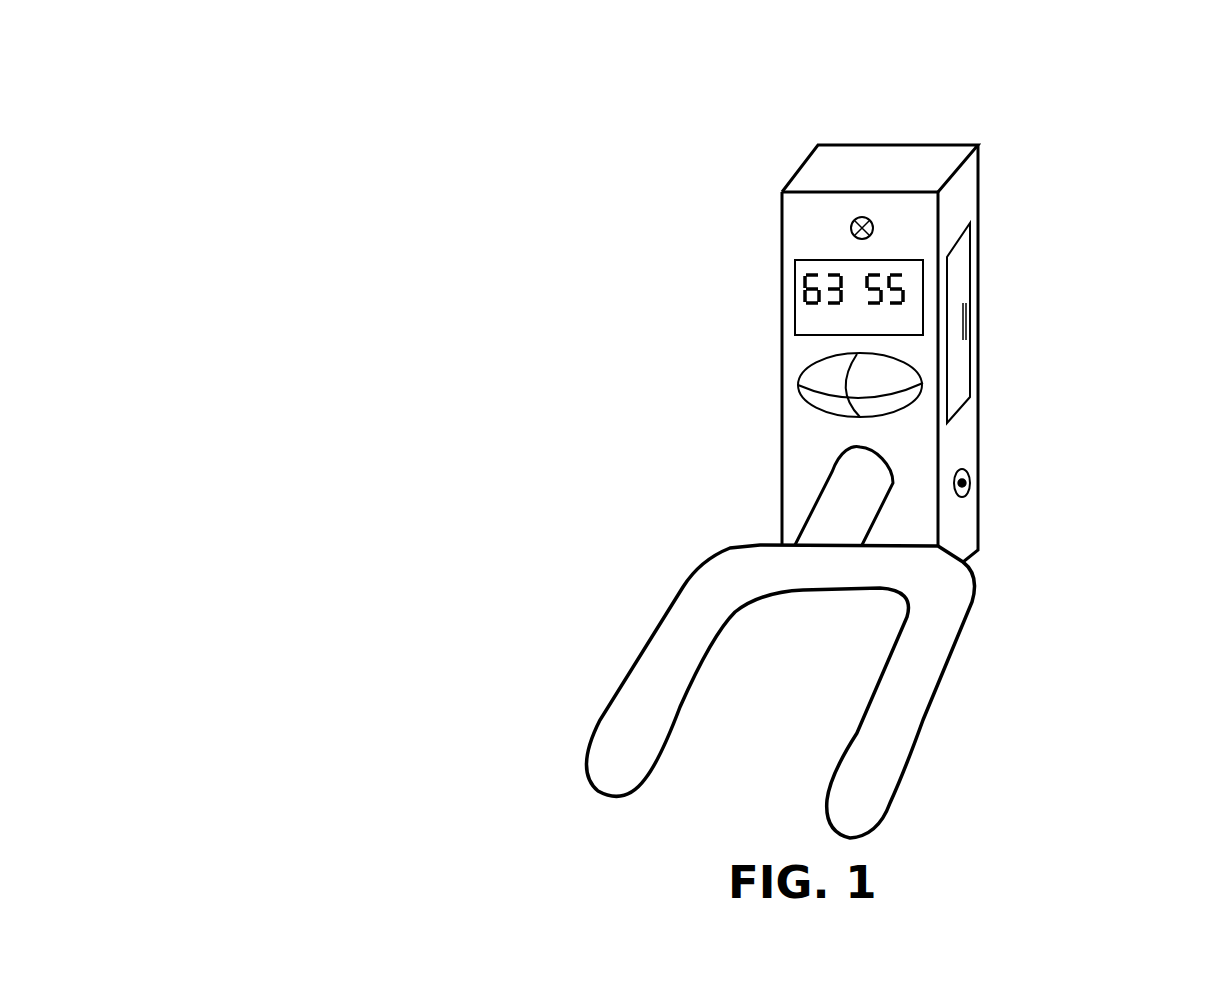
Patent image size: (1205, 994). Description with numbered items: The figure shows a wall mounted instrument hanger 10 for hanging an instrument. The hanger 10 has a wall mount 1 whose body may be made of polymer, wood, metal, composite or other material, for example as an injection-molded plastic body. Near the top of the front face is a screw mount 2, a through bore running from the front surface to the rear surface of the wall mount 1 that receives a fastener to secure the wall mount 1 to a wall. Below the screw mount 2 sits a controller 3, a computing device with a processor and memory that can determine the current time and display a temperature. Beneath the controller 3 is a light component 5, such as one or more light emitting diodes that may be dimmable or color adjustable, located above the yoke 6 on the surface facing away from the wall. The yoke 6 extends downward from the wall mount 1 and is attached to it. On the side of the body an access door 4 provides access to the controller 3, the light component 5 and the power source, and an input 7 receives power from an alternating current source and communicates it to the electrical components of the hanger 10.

The wall mounted instrument hanger 10 is at (246, 89).
The wall mount 1 is at (803, 217).
The screw mount 2 is at (871, 229).
The controller 3 is at (806, 312).
The access door 4 is at (960, 269).
The light component 5 is at (890, 402).
The yoke 6 is at (693, 605).
The input 7 is at (968, 500).